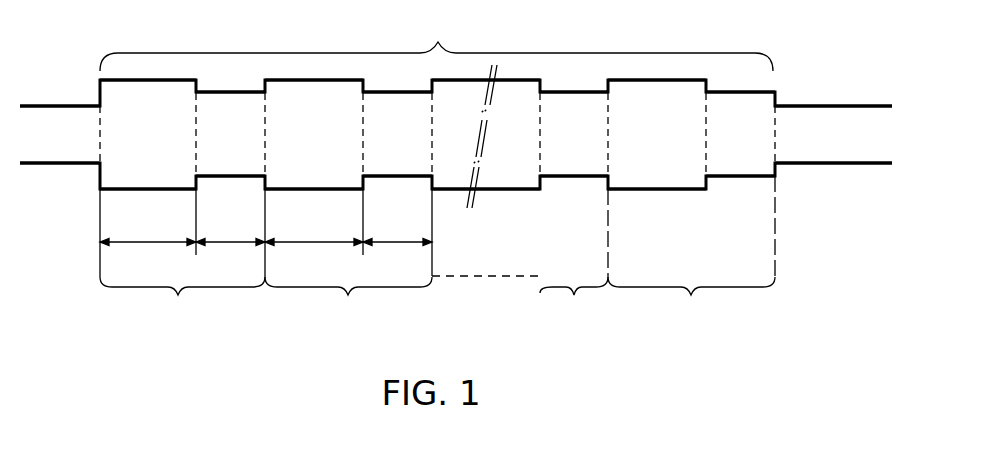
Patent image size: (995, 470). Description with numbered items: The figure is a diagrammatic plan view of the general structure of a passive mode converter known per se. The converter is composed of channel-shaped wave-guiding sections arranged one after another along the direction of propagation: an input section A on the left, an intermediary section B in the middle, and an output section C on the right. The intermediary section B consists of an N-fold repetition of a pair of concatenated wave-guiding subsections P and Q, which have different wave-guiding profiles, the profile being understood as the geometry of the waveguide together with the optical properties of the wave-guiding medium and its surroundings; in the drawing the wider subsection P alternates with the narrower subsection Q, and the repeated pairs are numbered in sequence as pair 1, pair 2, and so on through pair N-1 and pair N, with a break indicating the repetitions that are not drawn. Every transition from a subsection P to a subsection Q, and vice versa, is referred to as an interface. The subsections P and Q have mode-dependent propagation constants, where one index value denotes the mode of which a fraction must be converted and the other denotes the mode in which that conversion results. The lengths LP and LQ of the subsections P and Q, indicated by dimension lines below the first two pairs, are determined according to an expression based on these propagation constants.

The input section A is at (60, 134).
The intermediary section B is at (436, 40).
The output section C is at (833, 134).
The wave-guiding subsection P is at (403, 134).
The wave-guiding subsection Q is at (485, 134).
The length of subsection P LP is at (231, 228).
The length of subsection Q LQ is at (314, 228).
The first pair of subsections 1 is at (182, 302).
The second pair of subsections 2 is at (348, 302).
The (N-1)th pair of subsections N-1 is at (562, 302).
The Nth pair of subsections N is at (691, 302).